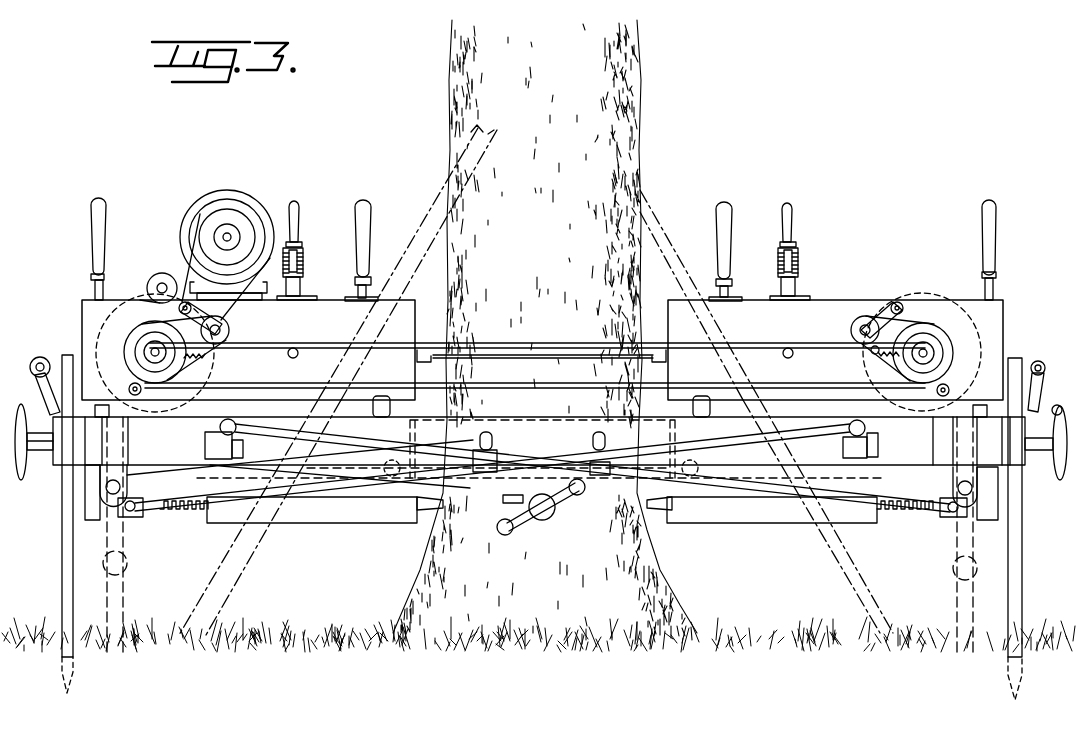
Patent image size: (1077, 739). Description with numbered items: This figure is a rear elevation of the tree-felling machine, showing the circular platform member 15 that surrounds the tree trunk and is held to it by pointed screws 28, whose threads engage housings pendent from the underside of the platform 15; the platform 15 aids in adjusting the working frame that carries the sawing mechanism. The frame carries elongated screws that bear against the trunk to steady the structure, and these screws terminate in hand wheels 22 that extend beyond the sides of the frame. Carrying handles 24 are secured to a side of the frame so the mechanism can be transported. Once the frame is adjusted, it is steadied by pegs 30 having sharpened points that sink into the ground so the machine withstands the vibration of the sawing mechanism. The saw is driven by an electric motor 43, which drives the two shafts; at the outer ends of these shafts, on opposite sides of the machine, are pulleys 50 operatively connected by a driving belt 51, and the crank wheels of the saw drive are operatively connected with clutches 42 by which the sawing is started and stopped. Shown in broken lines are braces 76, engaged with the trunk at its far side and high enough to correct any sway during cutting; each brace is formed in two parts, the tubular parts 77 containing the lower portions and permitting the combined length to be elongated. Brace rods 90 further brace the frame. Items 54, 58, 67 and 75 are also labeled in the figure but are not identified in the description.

The platform member 15 is at (343, 497).
The hand wheels 22 is at (18, 458).
The carrying handles 24 is at (1040, 361).
The pointed screws 28 is at (430, 512).
The pegs 30 is at (65, 563).
The clutches 42 is at (539, 437).
The electric motor 43 is at (236, 200).
The pulleys 50 is at (137, 358).
The driving belt 51 is at (330, 345).
The housing 54 is at (97, 318).
The control lever 58 is at (297, 203).
The operating lever 67 is at (360, 202).
The hand lever 75 is at (106, 216).
The braces 76 is at (246, 549).
The tubular parts 77 is at (423, 230).
The brace rods 90 is at (398, 442).